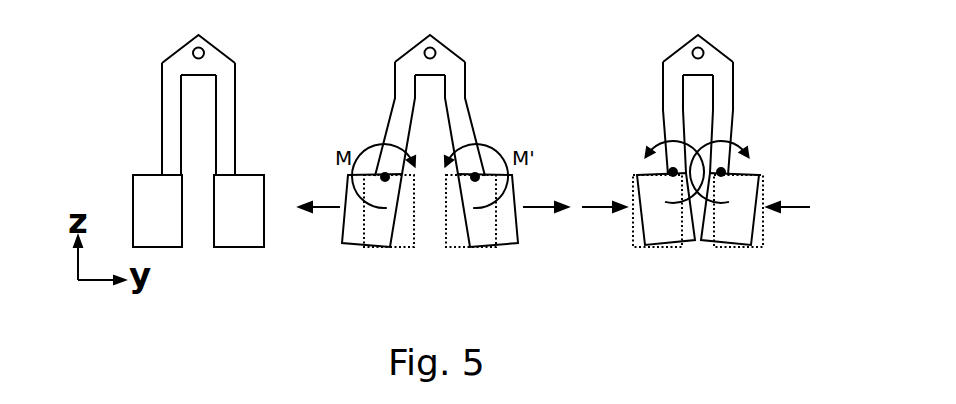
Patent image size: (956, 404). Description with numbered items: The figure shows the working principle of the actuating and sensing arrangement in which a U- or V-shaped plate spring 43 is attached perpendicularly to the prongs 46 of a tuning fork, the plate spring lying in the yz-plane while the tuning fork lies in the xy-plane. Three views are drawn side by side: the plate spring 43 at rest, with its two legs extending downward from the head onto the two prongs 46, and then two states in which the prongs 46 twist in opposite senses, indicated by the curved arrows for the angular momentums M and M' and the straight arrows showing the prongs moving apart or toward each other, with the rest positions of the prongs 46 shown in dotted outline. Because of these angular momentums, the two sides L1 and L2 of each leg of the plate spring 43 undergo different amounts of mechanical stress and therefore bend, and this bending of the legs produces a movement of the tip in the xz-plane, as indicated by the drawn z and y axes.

The plate spring 43 is at (718, 62).
The prongs 46 is at (157, 230).
The side of leg L1 is at (162, 143).
The side of leg L2 is at (181, 99).